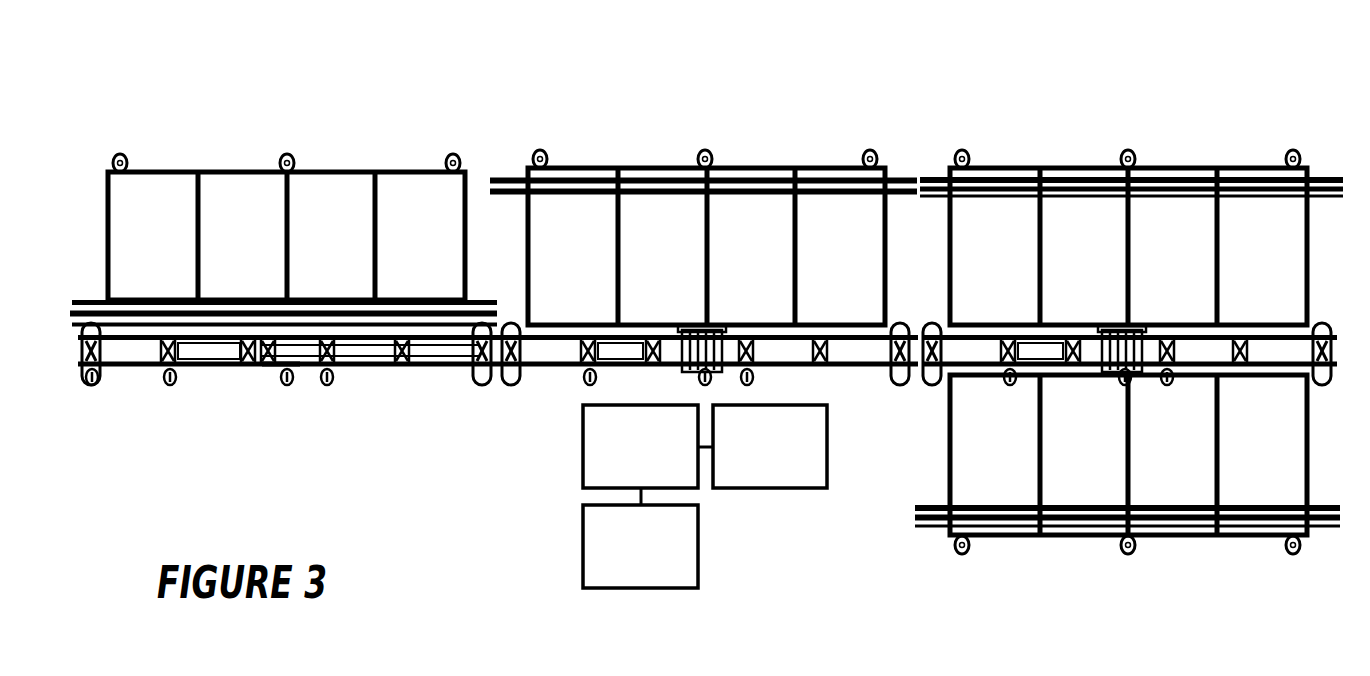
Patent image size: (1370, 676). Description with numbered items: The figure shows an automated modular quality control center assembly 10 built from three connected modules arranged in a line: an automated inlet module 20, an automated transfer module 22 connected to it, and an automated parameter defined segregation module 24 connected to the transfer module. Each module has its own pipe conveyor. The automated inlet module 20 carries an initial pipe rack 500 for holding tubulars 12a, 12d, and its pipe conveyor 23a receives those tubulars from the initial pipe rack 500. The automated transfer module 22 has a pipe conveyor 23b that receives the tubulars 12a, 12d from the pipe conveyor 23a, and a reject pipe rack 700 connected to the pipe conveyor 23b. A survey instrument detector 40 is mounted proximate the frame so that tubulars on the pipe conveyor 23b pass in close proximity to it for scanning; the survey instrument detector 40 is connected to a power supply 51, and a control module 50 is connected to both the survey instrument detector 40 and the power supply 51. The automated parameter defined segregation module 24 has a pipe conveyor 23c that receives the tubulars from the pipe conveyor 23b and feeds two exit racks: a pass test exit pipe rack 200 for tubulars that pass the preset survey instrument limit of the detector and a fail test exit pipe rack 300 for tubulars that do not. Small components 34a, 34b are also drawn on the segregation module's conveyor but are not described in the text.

The automated modular quality control center assembly 10 is at (1262, 46).
The automated inlet module 20 is at (112, 133).
The automated transfer module 22 is at (528, 133).
The automated parameter defined segregation module 24 is at (952, 133).
The initial pipe rack 500 is at (466, 240).
The reject pipe rack 700 is at (886, 266).
The pass test exit pipe rack 200 is at (1309, 268).
The fail test exit pipe rack 300 is at (1308, 440).
The tubular 12a is at (483, 299).
The tubular 12d is at (447, 365).
The pipe conveyor 23a is at (141, 367).
The pipe conveyor 23b is at (564, 367).
The pipe conveyor 23c is at (968, 382).
The transfer unit 34a is at (1070, 342).
The transfer unit 34b is at (1103, 371).
The control module 50 is at (656, 459).
The survey instrument detector 40 is at (786, 459).
The power supply 51 is at (656, 560).